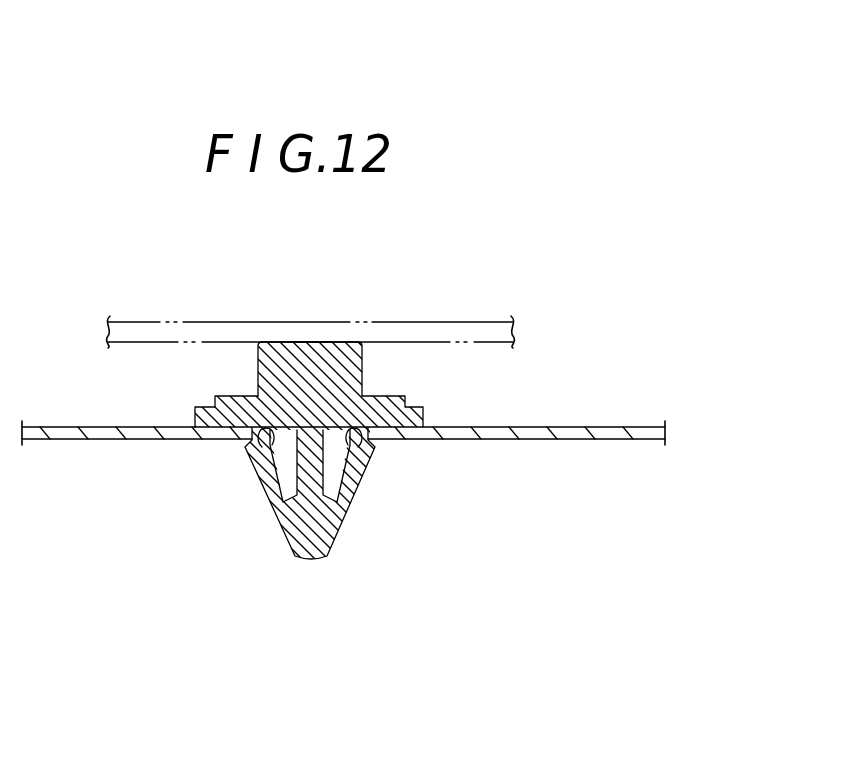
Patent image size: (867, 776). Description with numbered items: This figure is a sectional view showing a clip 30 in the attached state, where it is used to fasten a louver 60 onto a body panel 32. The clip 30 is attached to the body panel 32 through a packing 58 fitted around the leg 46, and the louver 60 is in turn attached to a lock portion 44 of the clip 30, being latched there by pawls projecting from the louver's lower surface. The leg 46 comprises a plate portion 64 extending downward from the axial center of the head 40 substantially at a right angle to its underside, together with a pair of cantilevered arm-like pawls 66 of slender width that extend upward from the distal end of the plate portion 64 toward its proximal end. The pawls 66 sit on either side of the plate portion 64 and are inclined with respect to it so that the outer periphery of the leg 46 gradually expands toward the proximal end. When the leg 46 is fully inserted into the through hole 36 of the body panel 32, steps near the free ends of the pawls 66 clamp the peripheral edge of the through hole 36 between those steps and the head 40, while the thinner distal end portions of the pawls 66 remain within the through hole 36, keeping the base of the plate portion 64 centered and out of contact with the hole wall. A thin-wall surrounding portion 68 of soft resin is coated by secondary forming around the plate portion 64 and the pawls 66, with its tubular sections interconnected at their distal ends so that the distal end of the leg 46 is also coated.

The clip 30 is at (248, 626).
The body panel 32 is at (598, 428).
The through hole 36 is at (362, 392).
The head 40 is at (232, 395).
The lock portion 44 is at (297, 352).
The leg 46 is at (336, 564).
The packing 58 is at (423, 410).
The louver 60 is at (456, 322).
The plate portion 64 is at (270, 510).
The pawls 66 is at (238, 440).
The surrounding portion 68 is at (350, 500).